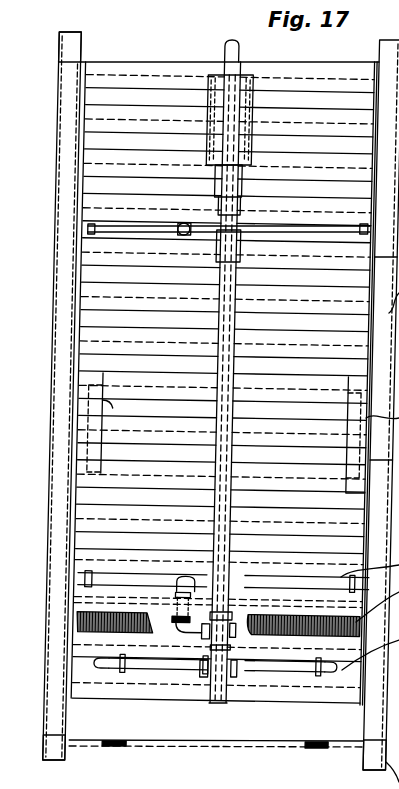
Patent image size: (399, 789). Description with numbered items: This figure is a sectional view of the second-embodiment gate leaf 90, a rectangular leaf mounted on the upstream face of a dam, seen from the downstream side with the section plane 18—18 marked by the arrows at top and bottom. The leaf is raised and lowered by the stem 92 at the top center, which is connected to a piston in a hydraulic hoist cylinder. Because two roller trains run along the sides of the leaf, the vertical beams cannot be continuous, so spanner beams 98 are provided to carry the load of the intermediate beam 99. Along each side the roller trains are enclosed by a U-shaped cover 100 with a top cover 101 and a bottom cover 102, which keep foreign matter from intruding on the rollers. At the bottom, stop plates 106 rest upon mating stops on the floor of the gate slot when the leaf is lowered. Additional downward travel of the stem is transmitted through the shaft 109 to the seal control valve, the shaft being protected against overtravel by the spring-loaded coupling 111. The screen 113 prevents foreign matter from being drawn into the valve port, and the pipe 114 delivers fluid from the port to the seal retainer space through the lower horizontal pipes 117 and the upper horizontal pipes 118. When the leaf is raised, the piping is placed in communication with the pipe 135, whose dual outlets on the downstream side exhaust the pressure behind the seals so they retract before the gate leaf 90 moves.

The section plane 18— 18 is at (219, 34).
The gate leaf 90 is at (165, 98).
The stem 92 is at (243, 50).
The spanner beams 98 is at (90, 450).
The intermediate beam 99 is at (104, 408).
The U-shaped cover 100 is at (54, 282).
The top cover 101 is at (83, 40).
The bottom cover 102 is at (46, 760).
The stop plates 106 is at (110, 750).
The shaft 109 is at (218, 367).
The spring-loaded coupling 111 is at (240, 246).
The screen 113 is at (80, 620).
The pipe 114 is at (88, 597).
The lower horizontal pipes 117 is at (86, 575).
The upper horizontal pipes 118 is at (115, 235).
The pipe 135 is at (147, 672).